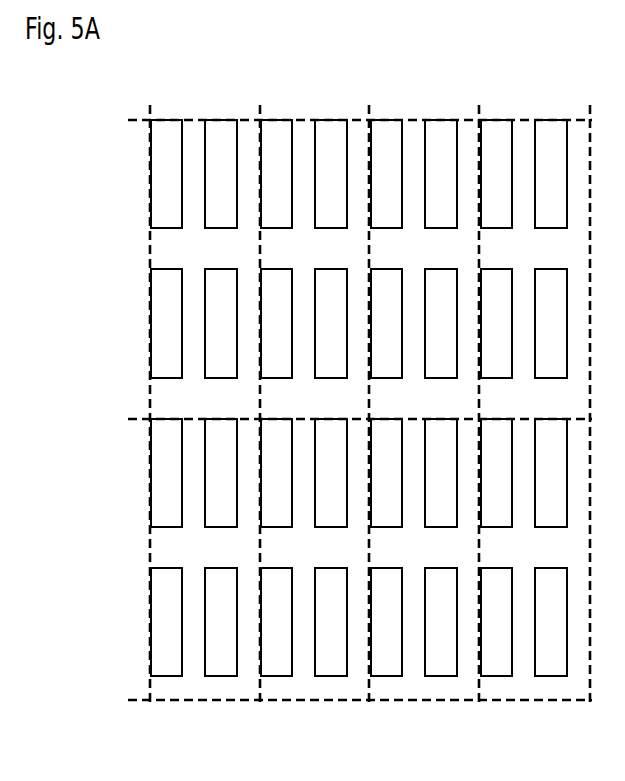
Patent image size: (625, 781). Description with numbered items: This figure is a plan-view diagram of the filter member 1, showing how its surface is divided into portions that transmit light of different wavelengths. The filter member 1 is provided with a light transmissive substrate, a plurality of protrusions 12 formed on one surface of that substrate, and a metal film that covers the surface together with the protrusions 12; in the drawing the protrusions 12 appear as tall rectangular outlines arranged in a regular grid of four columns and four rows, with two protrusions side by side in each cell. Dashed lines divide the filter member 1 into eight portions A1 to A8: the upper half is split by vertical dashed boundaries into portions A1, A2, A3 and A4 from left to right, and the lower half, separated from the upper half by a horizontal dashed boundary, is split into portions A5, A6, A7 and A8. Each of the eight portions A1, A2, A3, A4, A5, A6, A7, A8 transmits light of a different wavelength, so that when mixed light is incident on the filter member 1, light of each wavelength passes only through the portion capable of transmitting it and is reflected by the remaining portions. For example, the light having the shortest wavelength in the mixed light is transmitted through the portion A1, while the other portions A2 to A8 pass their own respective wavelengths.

The filter member 1 is at (93, 284).
The protrusions 12 is at (165, 173).
The portion A1 is at (167, 215).
The portion A2 is at (302, 132).
The portion A3 is at (412, 132).
The portion A4 is at (522, 132).
The portion A5 is at (199, 690).
The portion A6 is at (310, 690).
The portion A7 is at (417, 690).
The portion A8 is at (535, 690).